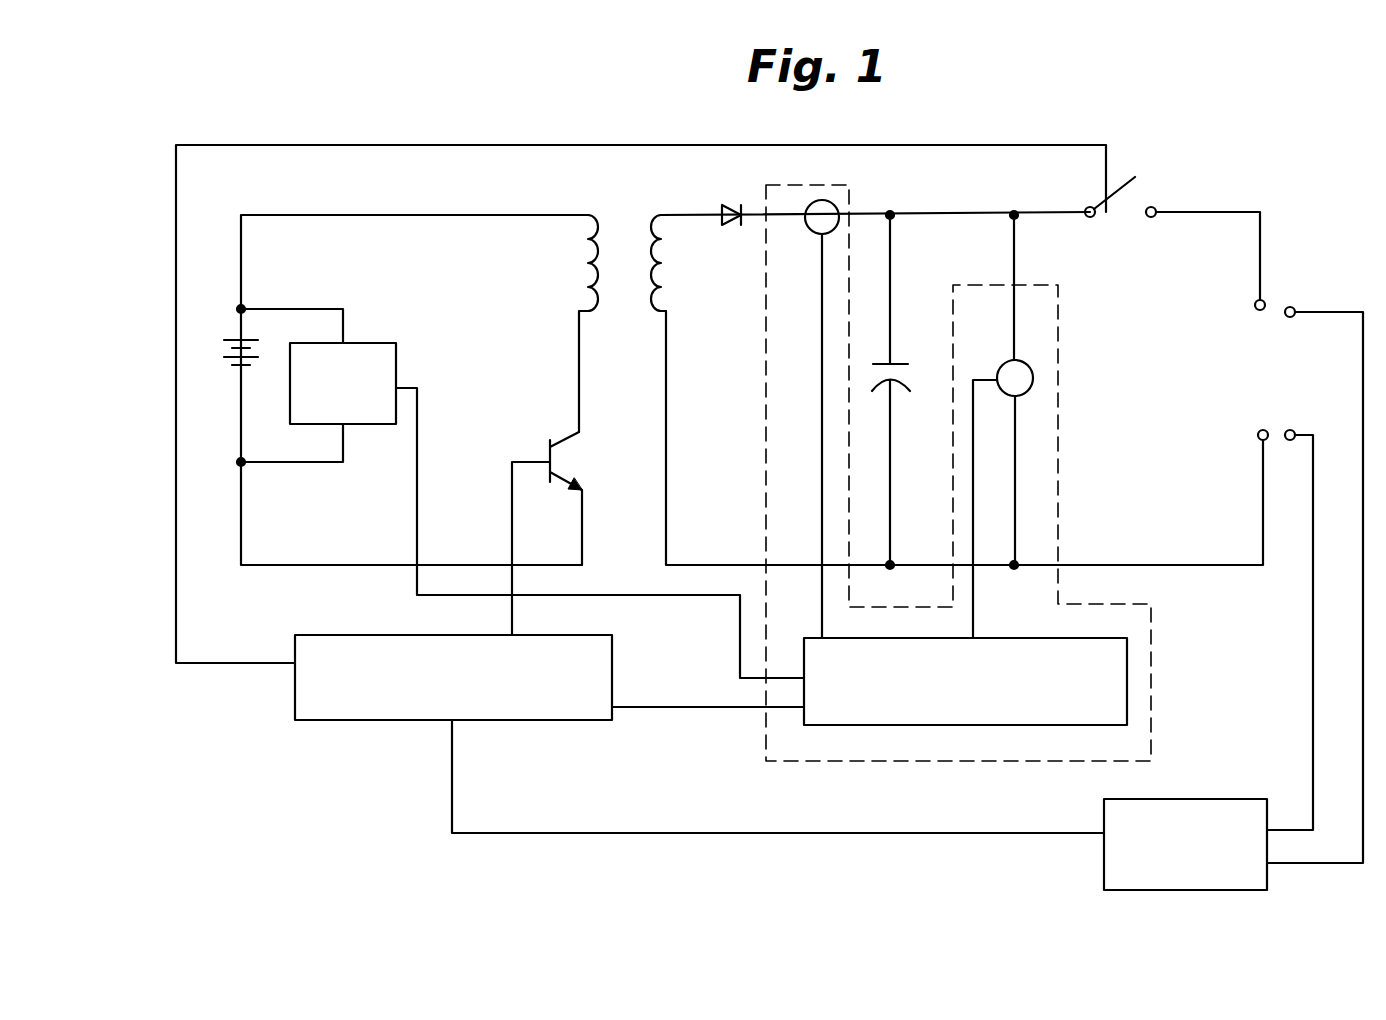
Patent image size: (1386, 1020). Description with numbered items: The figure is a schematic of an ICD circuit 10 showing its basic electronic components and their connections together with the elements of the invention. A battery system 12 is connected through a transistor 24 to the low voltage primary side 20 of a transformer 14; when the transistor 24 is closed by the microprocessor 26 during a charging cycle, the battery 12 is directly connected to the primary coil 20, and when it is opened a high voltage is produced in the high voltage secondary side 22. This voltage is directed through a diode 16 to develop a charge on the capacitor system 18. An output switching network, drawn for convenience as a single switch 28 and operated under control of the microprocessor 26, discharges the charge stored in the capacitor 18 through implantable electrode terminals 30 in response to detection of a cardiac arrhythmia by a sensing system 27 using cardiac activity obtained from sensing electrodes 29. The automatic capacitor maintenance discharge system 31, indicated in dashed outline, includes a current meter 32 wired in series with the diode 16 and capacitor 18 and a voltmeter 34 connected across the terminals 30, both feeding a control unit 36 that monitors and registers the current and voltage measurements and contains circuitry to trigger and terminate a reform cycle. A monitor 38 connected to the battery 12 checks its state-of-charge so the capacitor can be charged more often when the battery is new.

The ICD circuit 10 is at (597, 134).
The battery system 12 is at (254, 362).
The transformer 14 is at (622, 299).
The diode 16 is at (722, 205).
The capacitor system 18 is at (895, 382).
The low voltage primary side 20 is at (578, 265).
The high voltage secondary side 22 is at (676, 266).
The transistor 24 is at (548, 445).
The microprocessor 26 is at (500, 722).
The sensing system 27 is at (1225, 892).
The output switching network 28 is at (1131, 206).
The sensing electrodes 29 is at (1315, 566).
The implantable electrode terminals 30 is at (1265, 300).
The automatic capacitor maintenance discharge system 31 is at (1160, 690).
The current meter 32 is at (838, 200).
The voltmeter 34 is at (1033, 386).
The control unit 36 is at (962, 727).
The monitor 38 is at (400, 350).